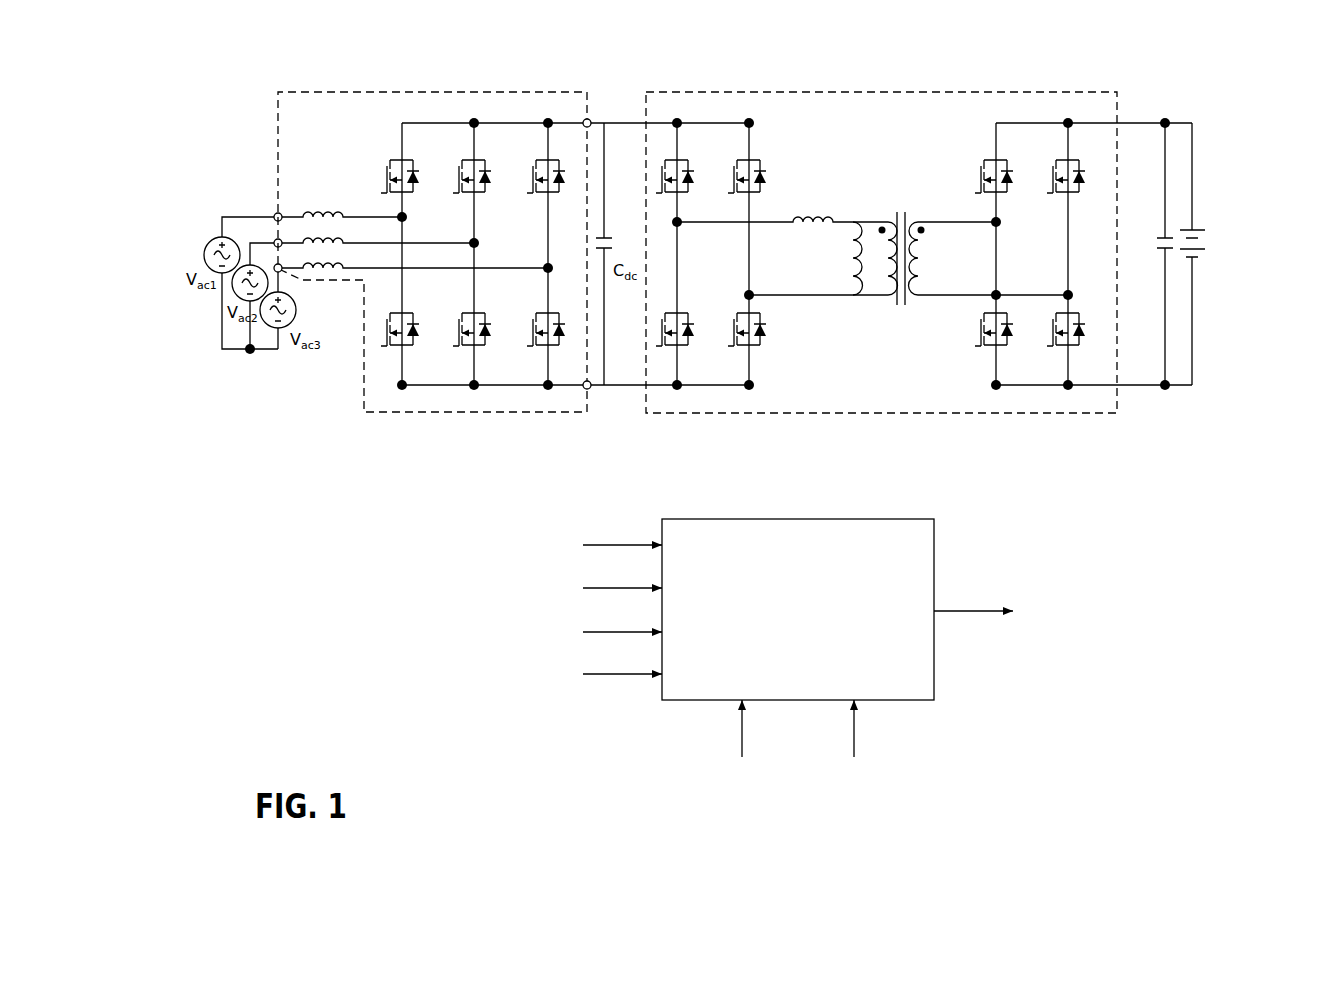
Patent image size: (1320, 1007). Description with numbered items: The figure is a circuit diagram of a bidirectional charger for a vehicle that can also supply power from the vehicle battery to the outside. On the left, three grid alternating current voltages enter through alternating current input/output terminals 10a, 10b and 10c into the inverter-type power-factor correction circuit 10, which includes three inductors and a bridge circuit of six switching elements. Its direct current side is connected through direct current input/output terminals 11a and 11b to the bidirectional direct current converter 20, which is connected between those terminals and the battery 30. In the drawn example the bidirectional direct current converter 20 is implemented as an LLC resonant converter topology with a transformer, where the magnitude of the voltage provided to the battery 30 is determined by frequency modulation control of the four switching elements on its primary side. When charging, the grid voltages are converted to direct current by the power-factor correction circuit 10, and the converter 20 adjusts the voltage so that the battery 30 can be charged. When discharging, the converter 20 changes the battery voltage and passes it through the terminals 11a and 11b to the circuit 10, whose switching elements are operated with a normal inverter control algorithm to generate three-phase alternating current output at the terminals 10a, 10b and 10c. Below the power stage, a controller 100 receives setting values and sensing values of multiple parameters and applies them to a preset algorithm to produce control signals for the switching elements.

The inverter-type power-factor correction circuit 10 is at (433, 92).
The alternating current input/output terminal 10a is at (280, 213).
The alternating current input/output terminal 10b is at (275, 240).
The alternating current input/output terminal 10c is at (283, 271).
The direct current input/output terminal 11a is at (590, 118).
The direct current input/output terminal 11b is at (590, 390).
The bidirectional direct current converter 20 is at (832, 92).
The battery 30 is at (1206, 240).
The controller 100 is at (797, 519).